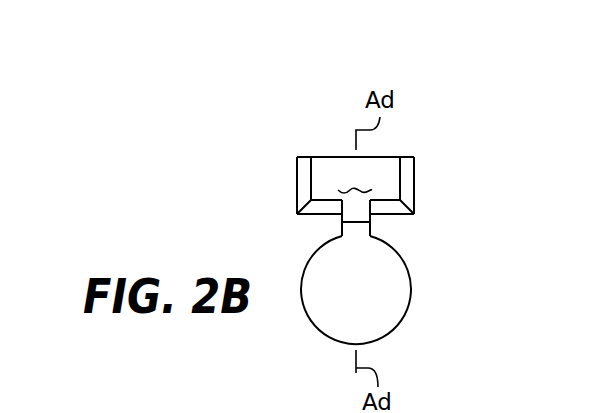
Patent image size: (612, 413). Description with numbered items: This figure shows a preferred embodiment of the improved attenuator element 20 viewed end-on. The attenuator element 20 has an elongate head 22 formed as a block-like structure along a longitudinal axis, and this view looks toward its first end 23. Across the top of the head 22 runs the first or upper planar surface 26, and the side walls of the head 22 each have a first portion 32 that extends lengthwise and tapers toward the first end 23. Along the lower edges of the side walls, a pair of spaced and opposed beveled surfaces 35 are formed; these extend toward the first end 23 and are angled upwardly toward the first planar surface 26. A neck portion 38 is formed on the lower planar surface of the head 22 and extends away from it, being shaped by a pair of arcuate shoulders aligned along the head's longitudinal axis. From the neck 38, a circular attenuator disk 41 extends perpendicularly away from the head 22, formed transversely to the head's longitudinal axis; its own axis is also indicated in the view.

The attenuator element 20 is at (360, 235).
The elongate head 22 is at (320, 165).
The first end 23 is at (355, 177).
The first or upper planar surface 26 is at (381, 157).
The first portion 32 is at (303, 179).
The beveled surfaces 35 is at (319, 208).
The neck portion 38 is at (353, 213).
The circular attenuator disk 41 is at (328, 330).